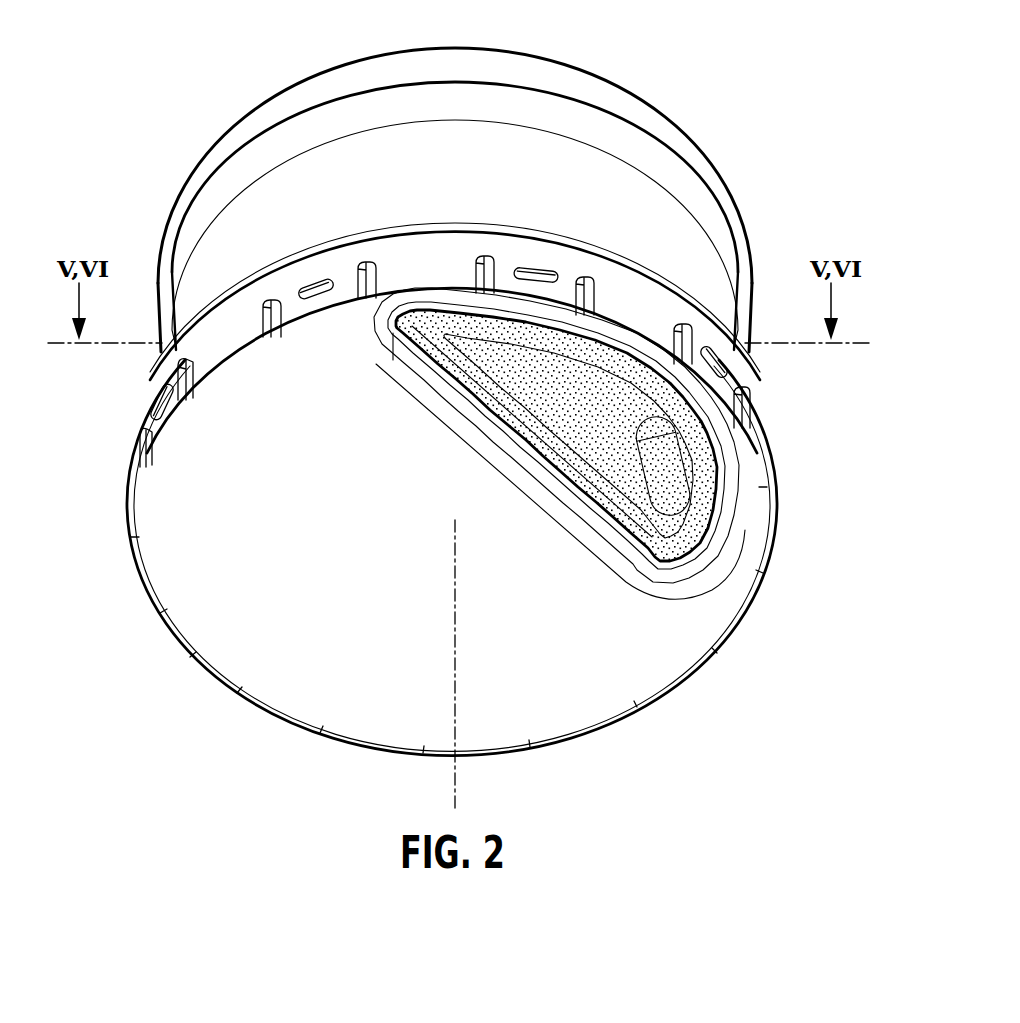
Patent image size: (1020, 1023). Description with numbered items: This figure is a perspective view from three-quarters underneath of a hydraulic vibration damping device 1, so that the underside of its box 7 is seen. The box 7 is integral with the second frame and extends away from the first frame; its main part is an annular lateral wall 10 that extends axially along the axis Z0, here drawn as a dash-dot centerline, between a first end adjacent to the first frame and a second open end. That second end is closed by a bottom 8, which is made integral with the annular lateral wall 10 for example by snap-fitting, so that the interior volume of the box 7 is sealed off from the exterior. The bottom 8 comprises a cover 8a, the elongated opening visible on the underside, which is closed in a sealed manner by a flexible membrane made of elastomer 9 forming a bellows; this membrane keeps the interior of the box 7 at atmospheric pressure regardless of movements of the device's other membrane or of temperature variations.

The hydraulic vibration damping device 1 is at (694, 65).
The box 7 is at (708, 263).
The annular lateral wall 10 is at (668, 237).
The bottom 8 is at (586, 692).
The cover 8a is at (622, 547).
The flexible membrane made of elastomer 9 is at (650, 452).
The axis Z0 is at (458, 800).